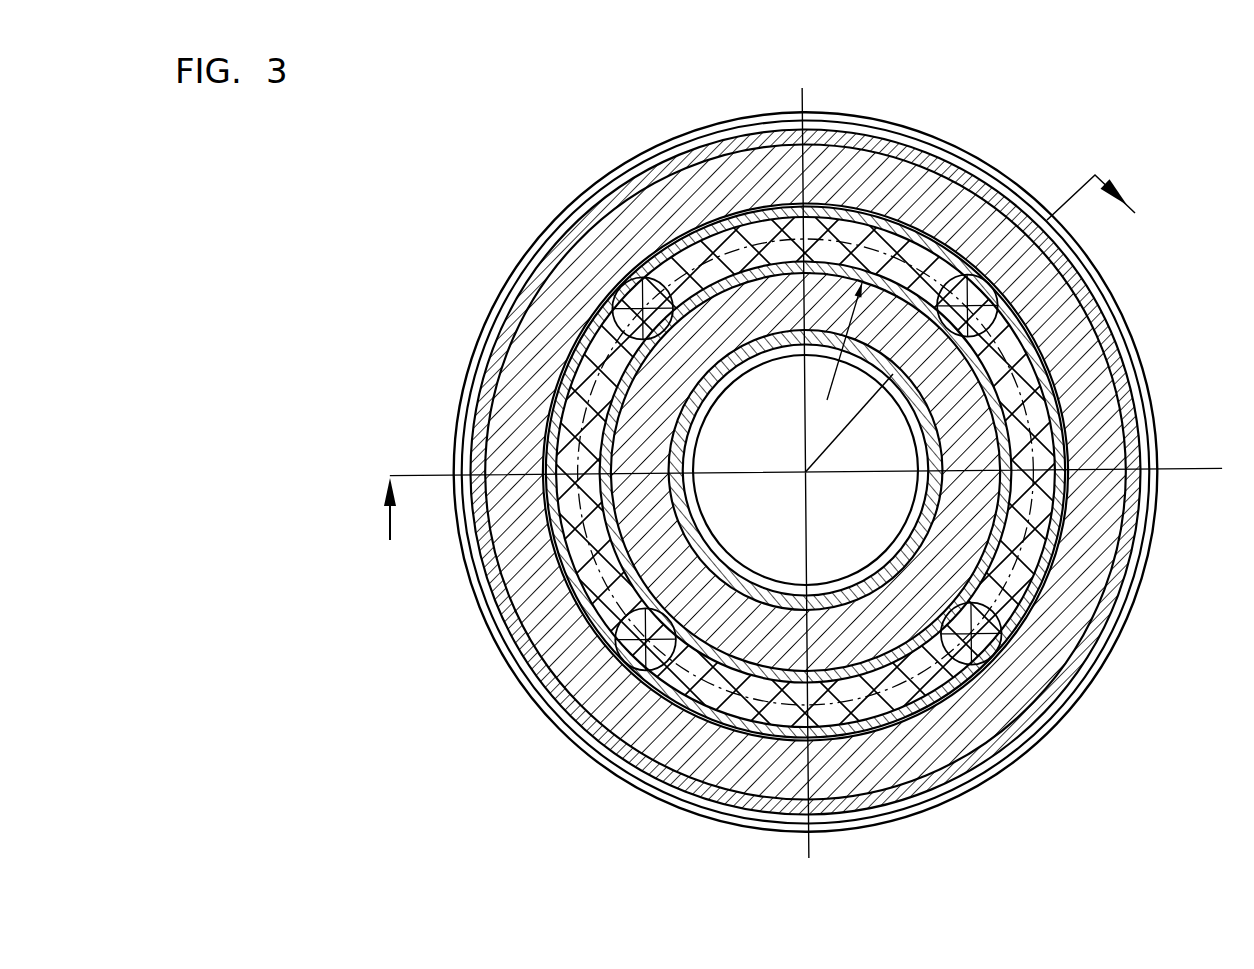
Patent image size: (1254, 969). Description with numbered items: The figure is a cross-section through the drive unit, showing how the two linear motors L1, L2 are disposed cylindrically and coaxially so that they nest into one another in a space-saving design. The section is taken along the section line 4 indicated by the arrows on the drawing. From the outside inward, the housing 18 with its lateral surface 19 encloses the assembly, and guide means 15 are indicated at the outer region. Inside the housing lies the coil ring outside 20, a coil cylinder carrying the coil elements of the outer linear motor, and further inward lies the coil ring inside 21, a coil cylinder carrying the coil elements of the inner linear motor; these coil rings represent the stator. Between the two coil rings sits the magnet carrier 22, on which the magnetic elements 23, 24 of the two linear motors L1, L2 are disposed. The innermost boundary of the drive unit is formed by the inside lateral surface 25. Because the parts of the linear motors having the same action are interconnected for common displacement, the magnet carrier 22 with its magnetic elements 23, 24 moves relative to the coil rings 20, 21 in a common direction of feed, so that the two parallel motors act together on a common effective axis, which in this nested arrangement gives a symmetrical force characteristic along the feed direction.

The guide means 15 is at (1097, 288).
The housing 18 is at (704, 128).
The lateral surface 19 is at (617, 200).
The coil ring outside 20 is at (1093, 388).
The coil ring inside 21 is at (667, 578).
The magnet carrier 22 is at (1030, 520).
The magnetic element 23 is at (1043, 577).
The magnetic element 24 is at (917, 428).
The inside lateral surface 25 is at (853, 592).
The linear motor L1 is at (850, 377).
The linear motor L2 is at (960, 190).
The section line 4- 4 is at (760, 367).